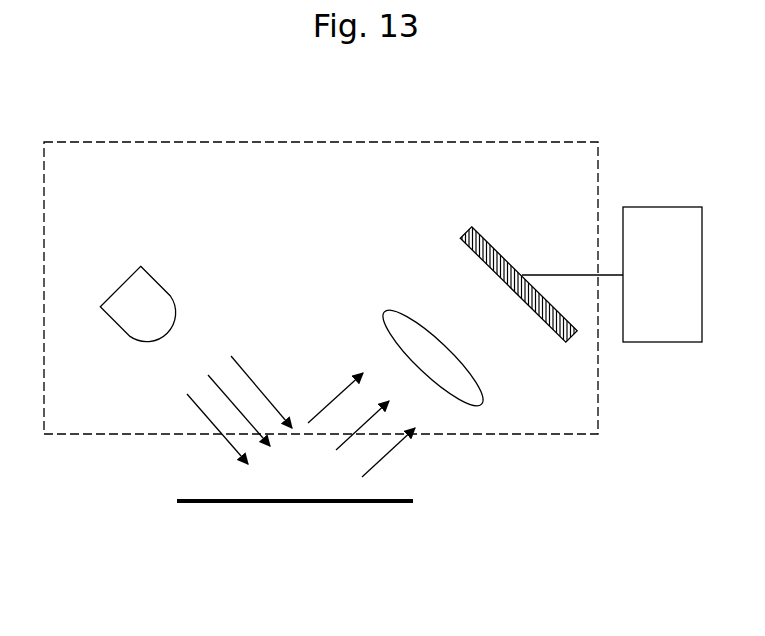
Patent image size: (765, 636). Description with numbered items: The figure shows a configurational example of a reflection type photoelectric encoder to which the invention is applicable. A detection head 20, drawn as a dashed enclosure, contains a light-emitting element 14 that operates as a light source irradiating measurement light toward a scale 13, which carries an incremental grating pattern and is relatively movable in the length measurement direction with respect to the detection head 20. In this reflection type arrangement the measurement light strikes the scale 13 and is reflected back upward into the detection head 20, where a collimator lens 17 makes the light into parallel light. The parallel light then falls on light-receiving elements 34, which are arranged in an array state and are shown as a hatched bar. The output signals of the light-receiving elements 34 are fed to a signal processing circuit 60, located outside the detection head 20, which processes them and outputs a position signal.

The scale 13 is at (227, 502).
The light-emitting element 14 is at (122, 285).
The collimator lens 17 is at (470, 370).
The detection head 20 is at (428, 141).
The light-receiving elements 34 is at (490, 242).
The signal processing circuit 60 is at (659, 207).